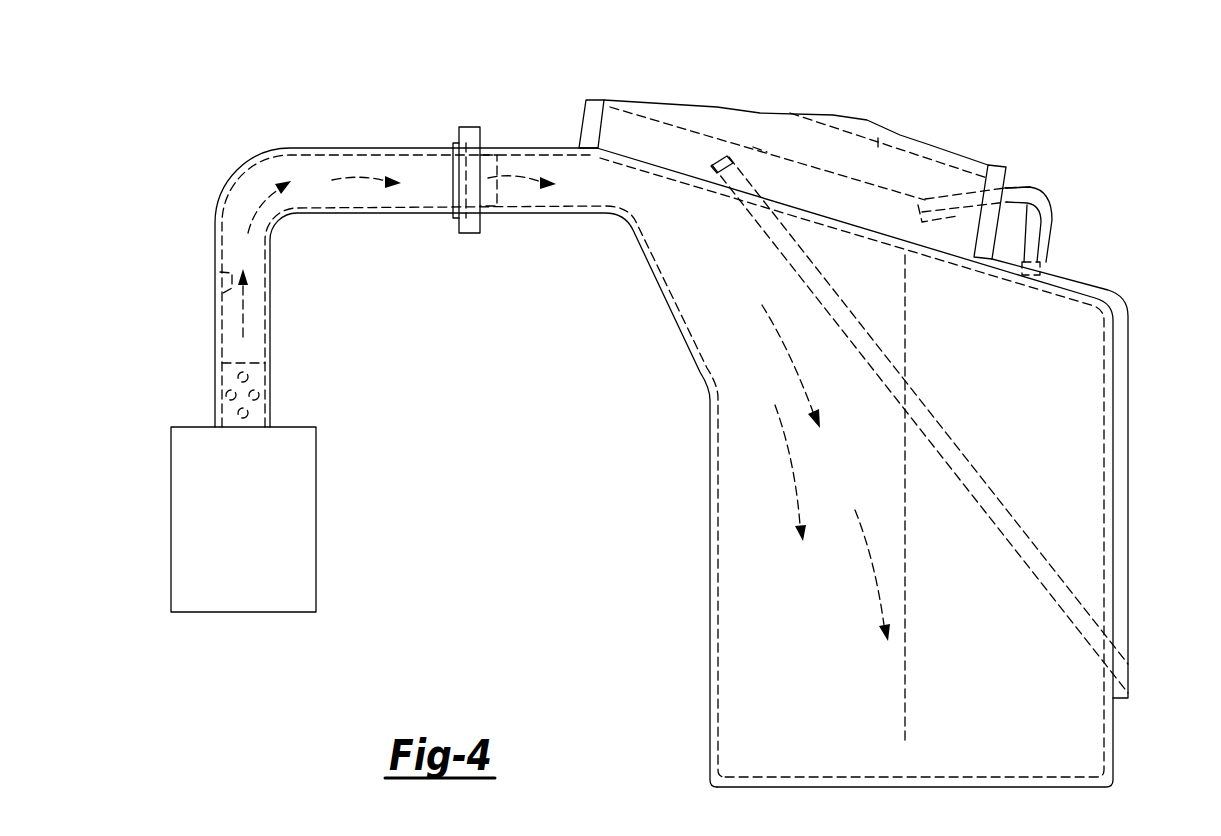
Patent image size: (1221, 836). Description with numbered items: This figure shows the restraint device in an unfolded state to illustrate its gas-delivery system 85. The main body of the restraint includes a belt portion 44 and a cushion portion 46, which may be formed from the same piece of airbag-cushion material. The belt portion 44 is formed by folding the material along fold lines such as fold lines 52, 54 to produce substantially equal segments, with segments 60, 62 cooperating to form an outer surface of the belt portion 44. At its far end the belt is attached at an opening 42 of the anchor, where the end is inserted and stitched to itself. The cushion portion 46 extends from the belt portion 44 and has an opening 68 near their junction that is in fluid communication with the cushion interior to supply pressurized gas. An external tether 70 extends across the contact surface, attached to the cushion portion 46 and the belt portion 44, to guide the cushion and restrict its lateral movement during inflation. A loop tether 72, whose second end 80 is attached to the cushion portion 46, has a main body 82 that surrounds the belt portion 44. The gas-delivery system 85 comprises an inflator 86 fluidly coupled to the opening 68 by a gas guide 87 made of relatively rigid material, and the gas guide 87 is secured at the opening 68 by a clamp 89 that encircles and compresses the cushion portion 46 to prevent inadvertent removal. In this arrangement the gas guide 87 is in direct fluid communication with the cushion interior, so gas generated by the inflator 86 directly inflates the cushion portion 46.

The opening 42 is at (717, 107).
The belt portion 44 is at (918, 172).
The cushion portion 46 is at (1102, 453).
The fold line 52 is at (878, 140).
The fold line 54 is at (767, 150).
The segment 60 is at (862, 163).
The segment 62 is at (753, 163).
The opening 68 is at (563, 210).
The external tether 70 is at (957, 443).
The loop tether 72 is at (1047, 213).
The second end 80 is at (1043, 272).
The main body 82 is at (1020, 190).
The gas-delivery system 85 is at (216, 248).
The inflator 86 is at (175, 485).
The gas guide 87 is at (223, 292).
The clamp 89 is at (467, 127).